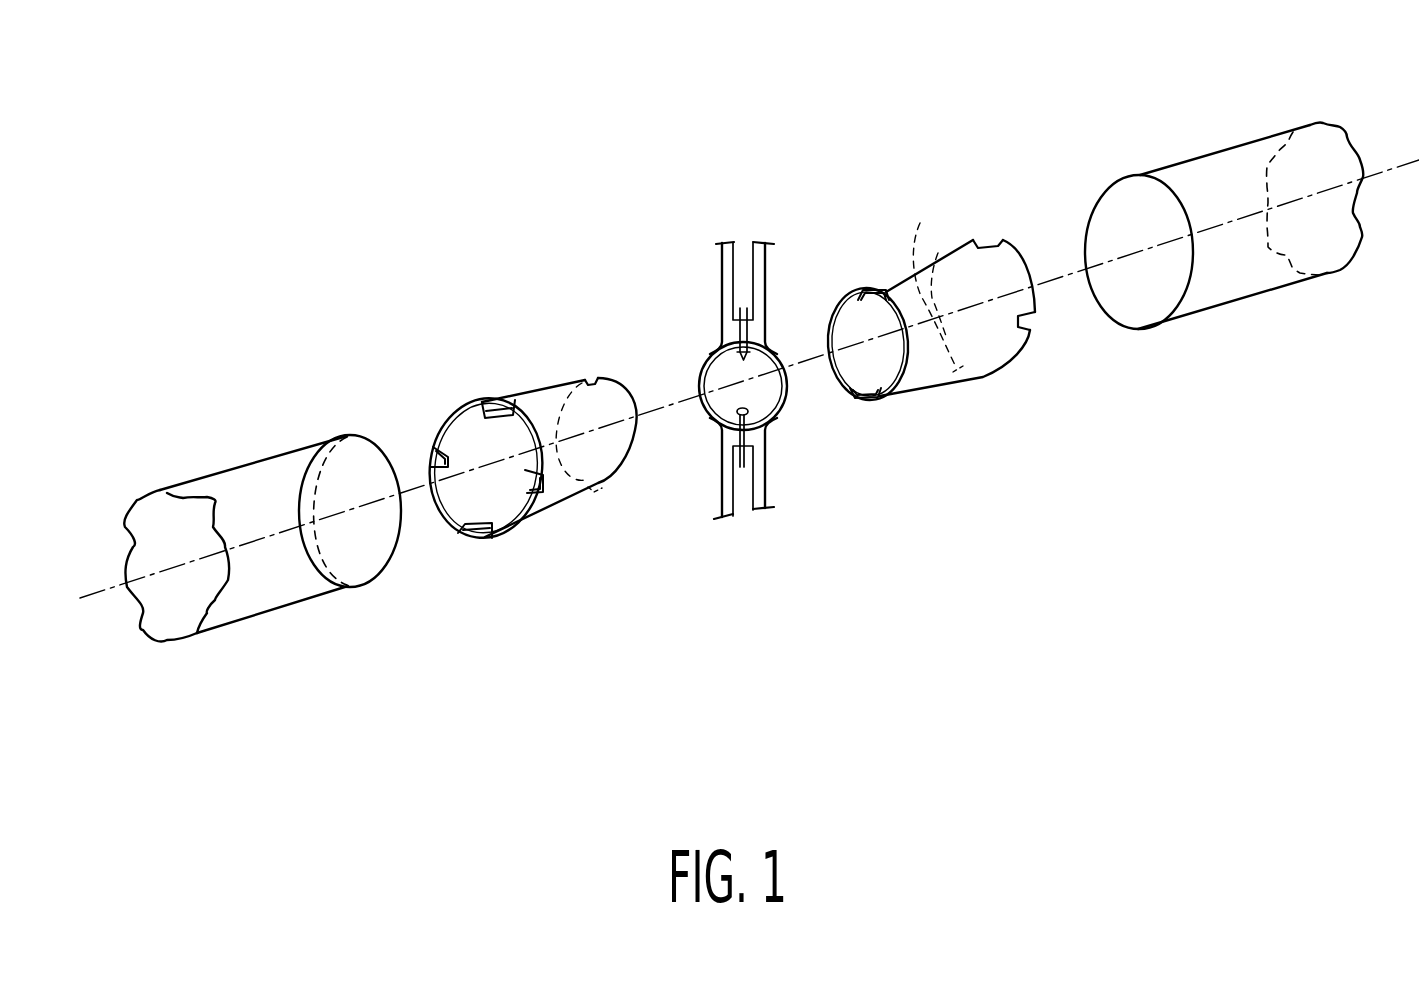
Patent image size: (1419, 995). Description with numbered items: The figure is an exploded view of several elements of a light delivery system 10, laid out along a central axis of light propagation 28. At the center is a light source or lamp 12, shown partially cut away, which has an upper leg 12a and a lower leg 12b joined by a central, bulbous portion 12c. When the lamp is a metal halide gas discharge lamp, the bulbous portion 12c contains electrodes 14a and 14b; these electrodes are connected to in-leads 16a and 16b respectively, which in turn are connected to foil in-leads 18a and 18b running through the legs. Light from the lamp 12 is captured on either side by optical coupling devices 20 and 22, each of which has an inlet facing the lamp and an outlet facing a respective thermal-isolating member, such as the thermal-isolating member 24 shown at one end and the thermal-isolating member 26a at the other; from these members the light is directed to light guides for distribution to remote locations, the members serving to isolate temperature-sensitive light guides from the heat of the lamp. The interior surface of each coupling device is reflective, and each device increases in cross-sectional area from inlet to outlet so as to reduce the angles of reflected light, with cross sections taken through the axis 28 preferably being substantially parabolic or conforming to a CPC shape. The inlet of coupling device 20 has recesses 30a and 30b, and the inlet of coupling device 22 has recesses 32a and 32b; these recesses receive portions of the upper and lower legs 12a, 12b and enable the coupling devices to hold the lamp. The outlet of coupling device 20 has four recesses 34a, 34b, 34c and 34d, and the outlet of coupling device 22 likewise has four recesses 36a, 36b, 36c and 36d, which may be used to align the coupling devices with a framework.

The light delivery system 10 is at (366, 155).
The lamp 12 is at (728, 385).
The upper leg 12a is at (762, 254).
The lower leg 12b is at (774, 517).
The bulbous portion 12c is at (777, 417).
The electrode 14a is at (707, 356).
The electrode 14b is at (722, 424).
The in-lead 16a is at (724, 334).
The in-lead 16b is at (724, 450).
The foil in-lead 18a is at (745, 262).
The foil in-lead 18b is at (742, 520).
The optical coupling device 20 is at (520, 448).
The optical coupling device 22 is at (943, 301).
The thermal-isolating member 24 is at (270, 450).
The second tube 26a is at (1193, 146).
The central axis of light propagation 28 is at (1058, 290).
The recess 30a is at (589, 377).
The recess 30b is at (598, 490).
The recess 32a is at (858, 290).
The recess 32b is at (866, 402).
The recess 34a is at (485, 412).
The recess 34b is at (532, 492).
The recess 34c is at (483, 540).
The recess 34d is at (430, 455).
The recess 36a is at (989, 238).
The recess 36b is at (1034, 322).
The recess 36c is at (955, 370).
The recess 36d is at (920, 222).